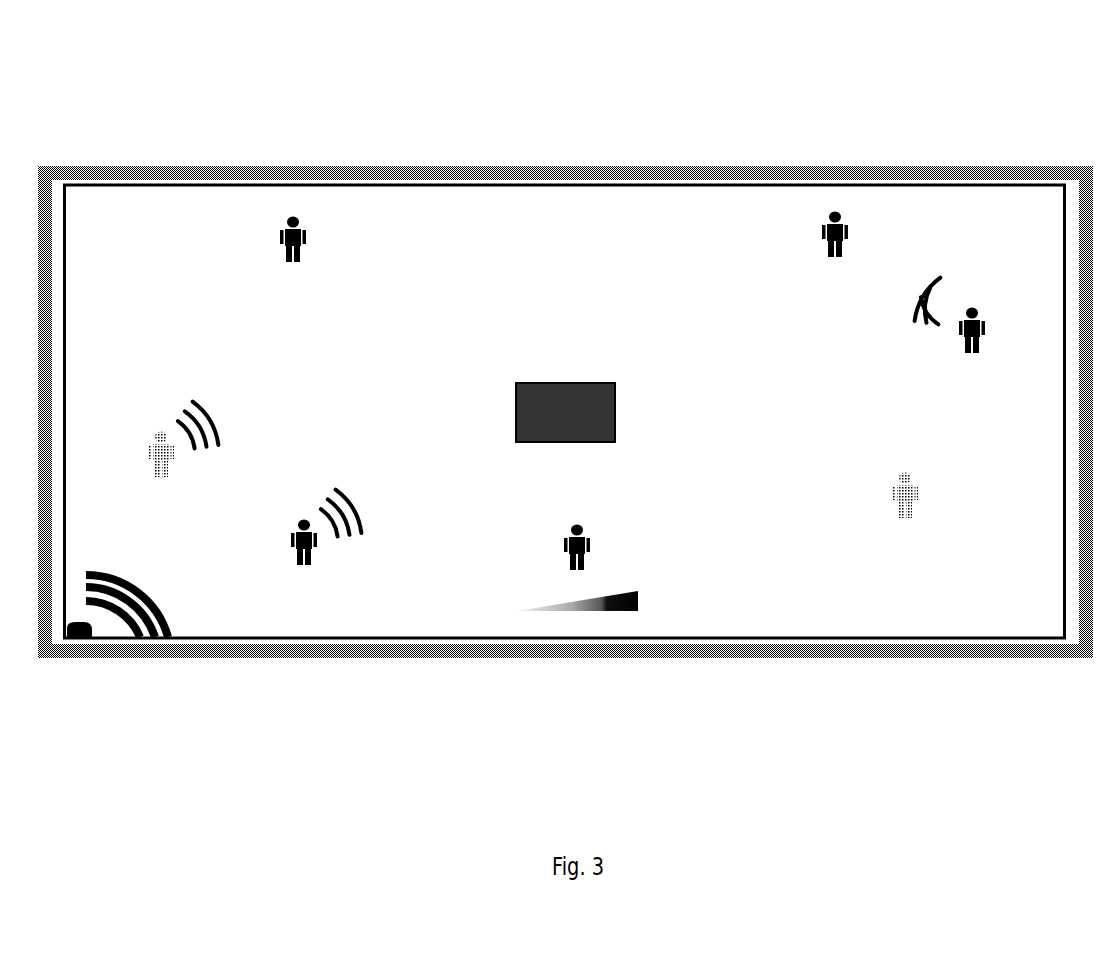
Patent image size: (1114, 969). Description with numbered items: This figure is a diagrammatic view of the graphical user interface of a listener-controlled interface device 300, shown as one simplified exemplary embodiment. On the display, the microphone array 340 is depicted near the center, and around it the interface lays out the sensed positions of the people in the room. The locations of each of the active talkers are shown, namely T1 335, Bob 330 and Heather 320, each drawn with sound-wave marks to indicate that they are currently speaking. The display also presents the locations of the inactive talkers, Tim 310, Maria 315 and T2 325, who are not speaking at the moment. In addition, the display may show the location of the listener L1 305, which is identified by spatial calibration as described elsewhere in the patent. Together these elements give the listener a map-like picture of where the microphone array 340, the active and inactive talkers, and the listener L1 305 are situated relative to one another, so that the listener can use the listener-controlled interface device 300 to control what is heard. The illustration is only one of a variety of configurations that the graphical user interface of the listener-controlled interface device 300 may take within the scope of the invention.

The listener-controlled interface device 300 is at (1004, 84).
The listener L1 305 is at (567, 553).
The inactive talker Tim 310 is at (282, 255).
The inactive talker Maria 315 is at (820, 245).
The active talker Heather 320 is at (990, 330).
The inactive talker T2 325 is at (888, 515).
The active talker Bob 330 is at (288, 551).
The active talker T1 335 is at (148, 447).
The microphone array 340 is at (515, 413).